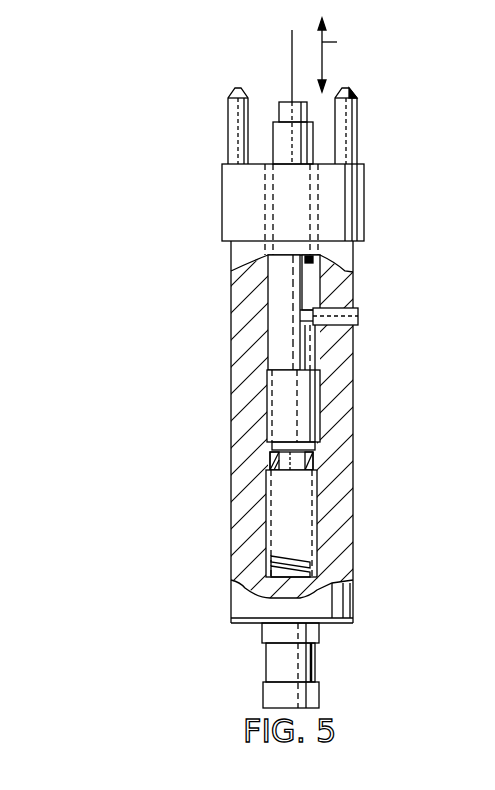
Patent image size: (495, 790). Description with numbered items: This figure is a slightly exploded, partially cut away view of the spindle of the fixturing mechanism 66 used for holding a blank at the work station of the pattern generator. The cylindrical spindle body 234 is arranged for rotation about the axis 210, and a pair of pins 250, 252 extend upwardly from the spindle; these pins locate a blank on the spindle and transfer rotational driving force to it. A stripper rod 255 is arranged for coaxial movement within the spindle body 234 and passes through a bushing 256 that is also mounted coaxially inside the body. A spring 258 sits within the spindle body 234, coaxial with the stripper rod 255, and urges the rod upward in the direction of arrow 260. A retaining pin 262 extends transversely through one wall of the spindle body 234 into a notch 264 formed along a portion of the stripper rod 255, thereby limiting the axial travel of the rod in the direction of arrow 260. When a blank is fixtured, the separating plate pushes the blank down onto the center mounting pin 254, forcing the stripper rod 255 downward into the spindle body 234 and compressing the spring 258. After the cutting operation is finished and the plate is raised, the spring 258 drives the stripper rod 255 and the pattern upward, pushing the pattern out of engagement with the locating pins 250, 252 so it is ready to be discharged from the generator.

The fixturing mechanism 66 is at (423, 211).
The axis 210 is at (289, 62).
The spindle body 234 is at (357, 366).
The pin 250 is at (228, 110).
The pin 252 is at (357, 118).
The center mounting pin 254 is at (278, 102).
The stripper rod 255 is at (283, 304).
The bushing 256 is at (272, 404).
The spring 258 is at (273, 478).
The arrow 260 is at (349, 55).
The retaining pin 262 is at (350, 308).
The notch 264 is at (318, 289).